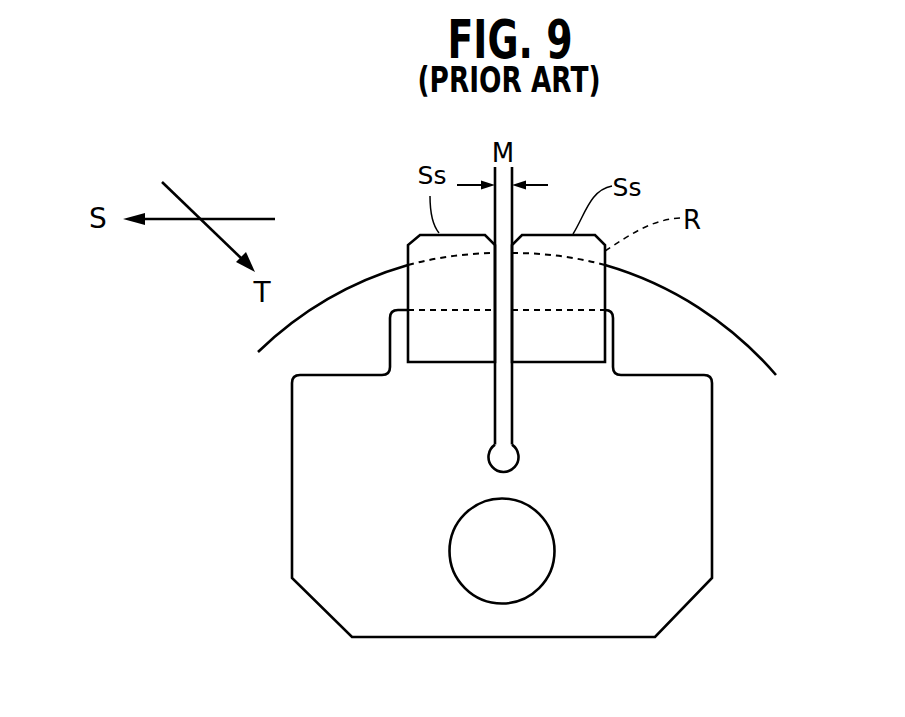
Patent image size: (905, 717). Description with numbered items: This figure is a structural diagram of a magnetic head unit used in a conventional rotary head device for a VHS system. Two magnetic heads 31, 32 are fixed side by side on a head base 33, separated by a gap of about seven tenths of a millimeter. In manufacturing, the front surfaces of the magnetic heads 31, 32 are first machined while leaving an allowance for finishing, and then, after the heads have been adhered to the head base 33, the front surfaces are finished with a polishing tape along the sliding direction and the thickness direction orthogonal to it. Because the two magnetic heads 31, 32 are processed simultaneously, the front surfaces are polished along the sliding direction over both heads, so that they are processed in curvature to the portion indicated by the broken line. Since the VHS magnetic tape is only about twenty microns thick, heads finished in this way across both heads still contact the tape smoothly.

The magnetic head 31 is at (533, 270).
The magnetic head 32 is at (428, 278).
The head base 33 is at (685, 498).